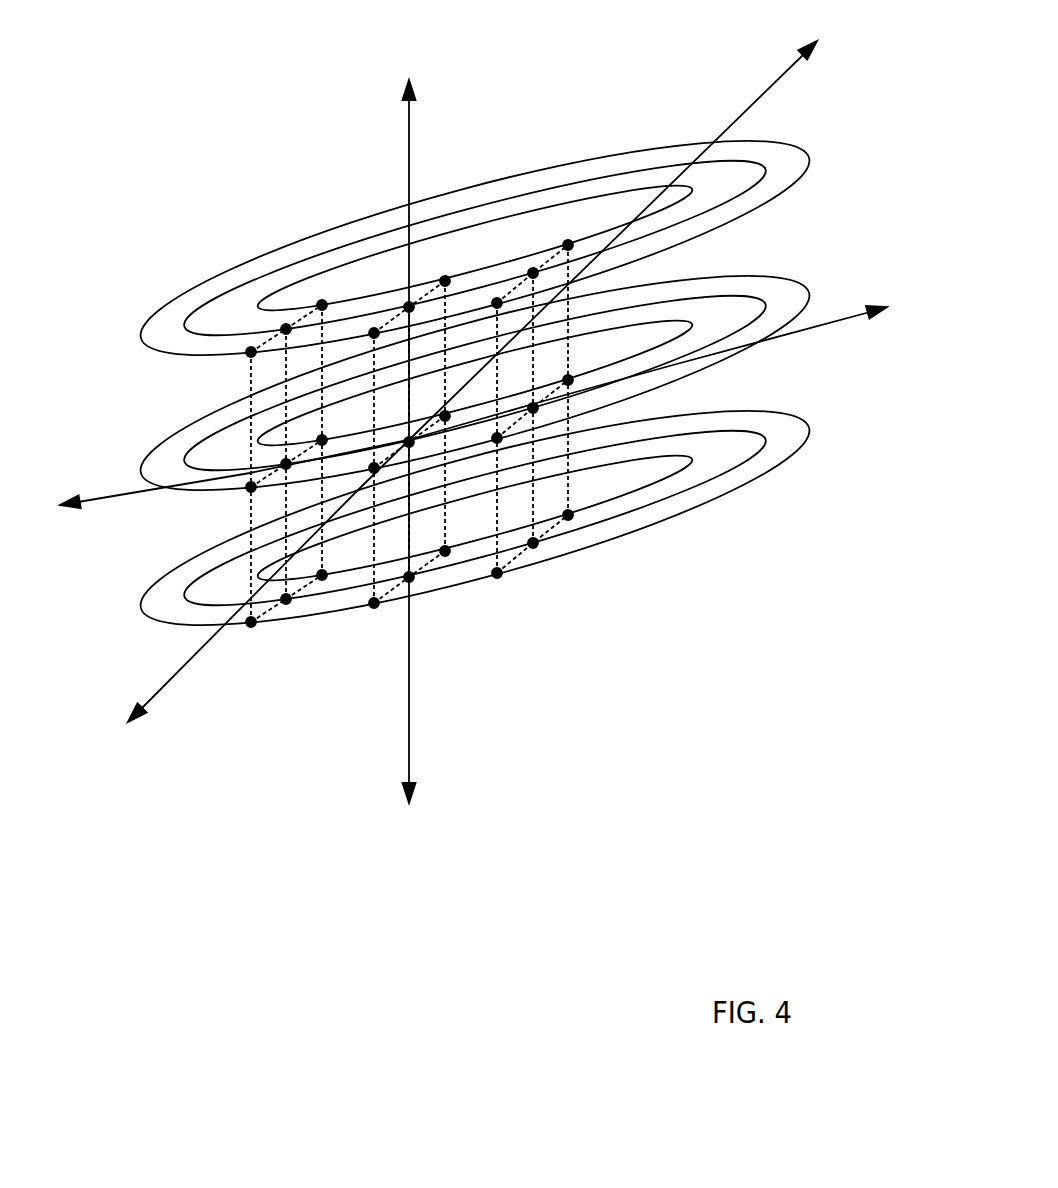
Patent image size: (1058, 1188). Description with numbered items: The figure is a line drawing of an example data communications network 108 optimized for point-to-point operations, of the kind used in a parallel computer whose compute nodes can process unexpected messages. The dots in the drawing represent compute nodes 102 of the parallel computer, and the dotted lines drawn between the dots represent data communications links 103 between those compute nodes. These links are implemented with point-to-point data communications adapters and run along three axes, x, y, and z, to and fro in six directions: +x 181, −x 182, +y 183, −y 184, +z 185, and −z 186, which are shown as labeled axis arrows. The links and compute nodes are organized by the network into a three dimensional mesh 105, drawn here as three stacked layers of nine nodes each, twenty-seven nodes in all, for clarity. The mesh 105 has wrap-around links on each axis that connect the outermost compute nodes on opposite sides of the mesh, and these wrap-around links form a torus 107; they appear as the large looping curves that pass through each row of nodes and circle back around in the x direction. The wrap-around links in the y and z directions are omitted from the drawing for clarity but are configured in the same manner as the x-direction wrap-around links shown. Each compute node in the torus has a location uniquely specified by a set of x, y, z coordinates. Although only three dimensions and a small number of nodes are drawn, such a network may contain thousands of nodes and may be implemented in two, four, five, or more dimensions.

The compute nodes 102 is at (497, 578).
The data communications links 103 is at (250, 518).
The three dimensional mesh 105 is at (442, 462).
The torus 107 is at (230, 251).
The data communications network 108 is at (461, 573).
The +x direction 181 is at (895, 337).
The −x direction 182 is at (26, 551).
The +y direction 183 is at (830, 66).
The −y direction 184 is at (93, 772).
The +z direction 185 is at (395, 69).
The −z direction 186 is at (398, 869).